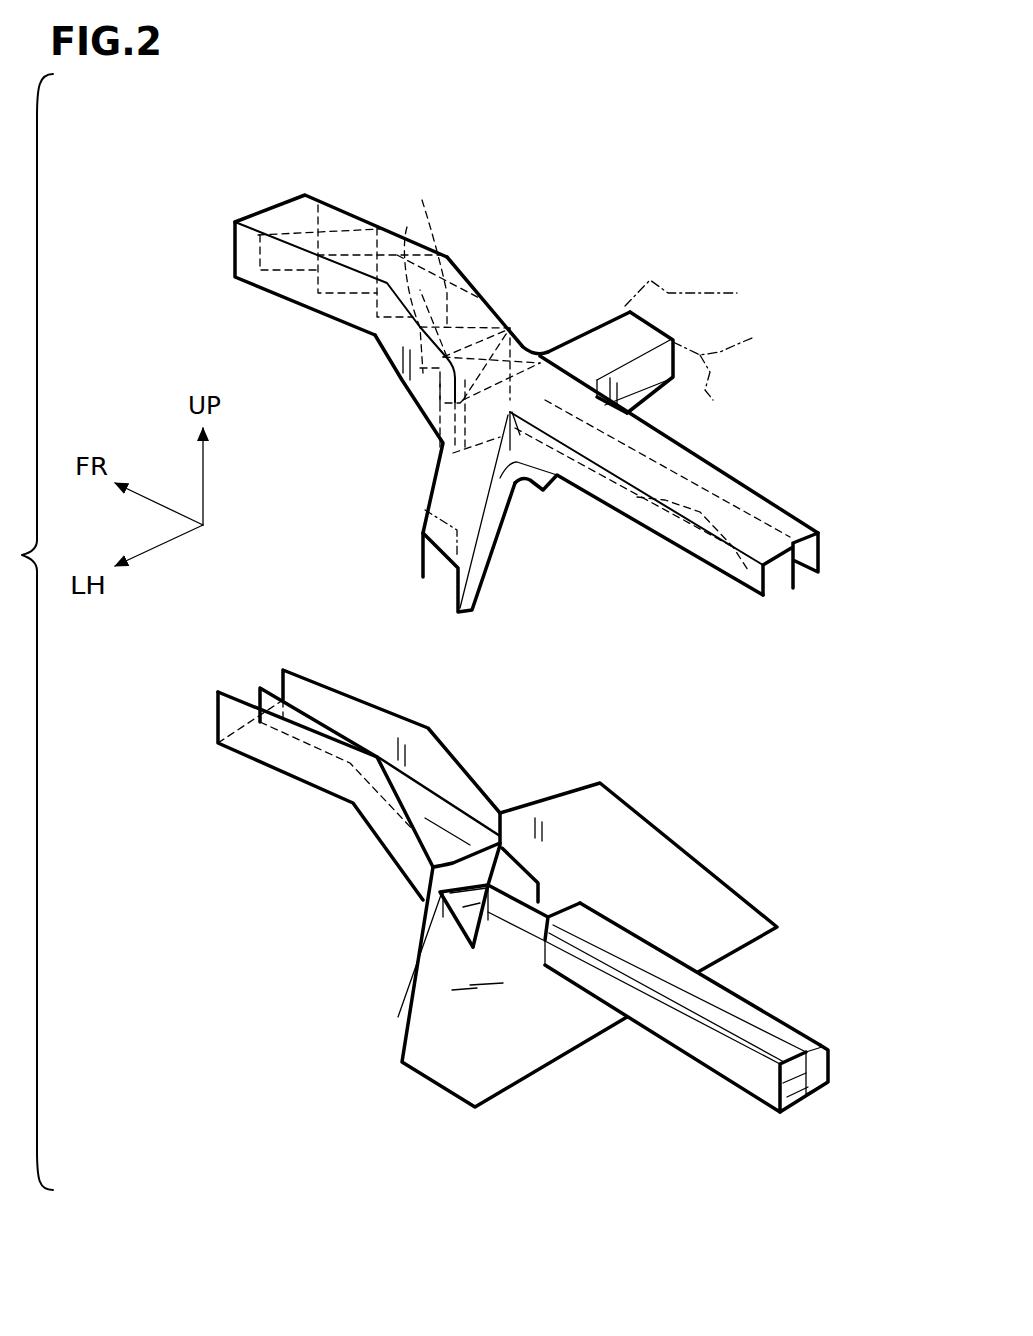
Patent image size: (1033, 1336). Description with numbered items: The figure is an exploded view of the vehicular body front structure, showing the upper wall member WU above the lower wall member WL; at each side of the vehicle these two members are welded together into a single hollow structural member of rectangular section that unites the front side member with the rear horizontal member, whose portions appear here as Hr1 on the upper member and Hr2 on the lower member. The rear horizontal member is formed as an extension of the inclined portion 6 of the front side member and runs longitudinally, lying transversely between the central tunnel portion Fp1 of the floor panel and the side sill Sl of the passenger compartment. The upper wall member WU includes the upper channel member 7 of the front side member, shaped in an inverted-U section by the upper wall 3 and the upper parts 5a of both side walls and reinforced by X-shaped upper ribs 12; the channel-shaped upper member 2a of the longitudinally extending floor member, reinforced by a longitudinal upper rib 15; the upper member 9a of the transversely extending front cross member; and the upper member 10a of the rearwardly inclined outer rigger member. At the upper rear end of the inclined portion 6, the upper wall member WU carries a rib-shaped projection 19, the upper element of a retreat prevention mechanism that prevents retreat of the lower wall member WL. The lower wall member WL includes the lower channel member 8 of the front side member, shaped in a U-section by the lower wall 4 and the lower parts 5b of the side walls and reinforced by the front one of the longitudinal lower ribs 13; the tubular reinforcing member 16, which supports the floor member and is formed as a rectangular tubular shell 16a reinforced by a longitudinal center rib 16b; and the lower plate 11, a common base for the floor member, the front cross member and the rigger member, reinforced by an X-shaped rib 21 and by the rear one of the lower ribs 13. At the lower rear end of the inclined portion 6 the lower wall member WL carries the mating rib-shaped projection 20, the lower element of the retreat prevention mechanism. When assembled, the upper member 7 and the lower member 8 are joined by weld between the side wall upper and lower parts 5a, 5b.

The upper member of floor member 2a is at (760, 508).
The upper wall 3 is at (342, 213).
The lower wall 4 is at (420, 783).
The upper parts of side walls 5a is at (295, 292).
The lower parts of side walls 5b is at (378, 830).
The inclined portion 6 is at (484, 288).
The upper channel member 7 is at (479, 239).
The lower channel member 8 is at (313, 881).
The upper member of front cross member 9a is at (628, 311).
The upper member of outer rigger member 10a is at (433, 490).
The lower plate 11 is at (700, 893).
The X-shaped upper ribs 12 is at (407, 227).
The longitudinal lower ribs 13 is at (338, 722).
The longitudinal upper rib 15 is at (800, 578).
The tubular reinforcing member 16 is at (806, 1024).
The rectangular tubular shell 16a is at (768, 1100).
The longitudinal center rib 16b is at (820, 1093).
The rib-shaped projection 19 is at (437, 453).
The rib-shaped projection 20 is at (487, 822).
The X-shaped rib 21 is at (520, 852).
The upper horizontal reference Hr1 is at (560, 375).
The lower horizontal reference Hr2 is at (539, 1075).
The central tunnel portion Fp1 is at (707, 333).
The side sill Sl is at (465, 545).
The upper wall member WU is at (592, 181).
The lower wall member WL is at (290, 1021).